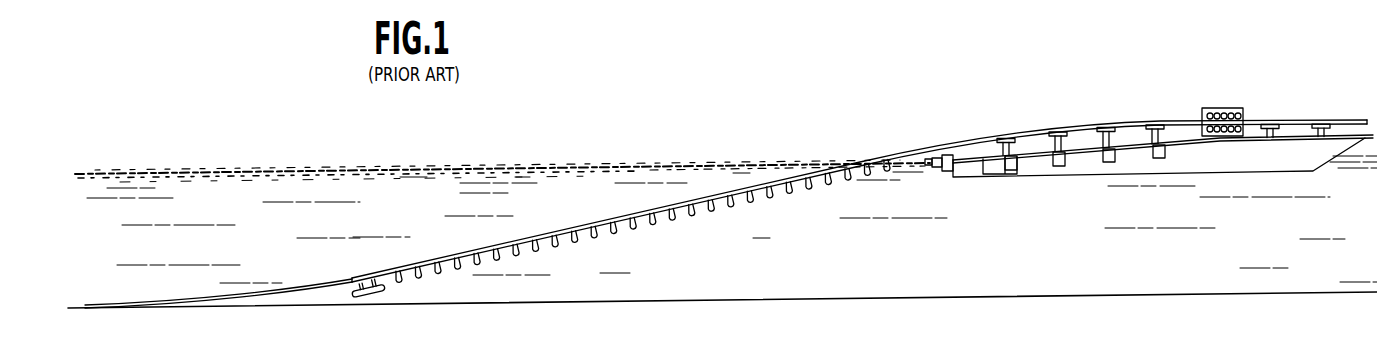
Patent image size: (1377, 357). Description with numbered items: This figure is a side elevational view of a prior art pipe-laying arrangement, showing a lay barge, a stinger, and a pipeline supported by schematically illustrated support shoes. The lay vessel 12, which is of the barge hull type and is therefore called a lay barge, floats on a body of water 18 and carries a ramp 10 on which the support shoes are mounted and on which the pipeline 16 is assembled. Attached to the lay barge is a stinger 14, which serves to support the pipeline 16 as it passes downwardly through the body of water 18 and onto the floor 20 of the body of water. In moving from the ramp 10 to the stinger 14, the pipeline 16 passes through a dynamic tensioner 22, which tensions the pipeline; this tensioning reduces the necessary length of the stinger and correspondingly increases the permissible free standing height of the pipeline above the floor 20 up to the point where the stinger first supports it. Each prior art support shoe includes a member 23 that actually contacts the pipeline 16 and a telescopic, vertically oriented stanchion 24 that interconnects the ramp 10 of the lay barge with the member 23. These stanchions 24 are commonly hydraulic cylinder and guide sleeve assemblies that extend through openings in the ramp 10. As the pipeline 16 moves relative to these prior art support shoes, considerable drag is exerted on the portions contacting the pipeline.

The ramp 10 is at (1149, 156).
The lay vessel 12 is at (1259, 168).
The stinger 14 is at (570, 243).
The pipeline 16 is at (987, 140).
The body of water 18 is at (453, 183).
The floor of the body of water 20 is at (681, 301).
The dynamic tensioner 22 is at (1232, 108).
The member contacting the pipeline 23 is at (1008, 137).
The telescopic vertically oriented stanchion 24 is at (1110, 143).